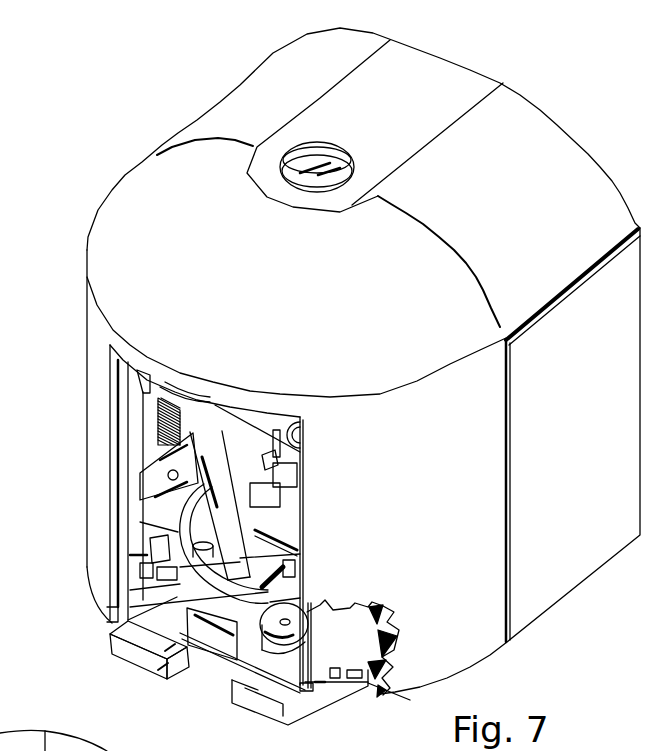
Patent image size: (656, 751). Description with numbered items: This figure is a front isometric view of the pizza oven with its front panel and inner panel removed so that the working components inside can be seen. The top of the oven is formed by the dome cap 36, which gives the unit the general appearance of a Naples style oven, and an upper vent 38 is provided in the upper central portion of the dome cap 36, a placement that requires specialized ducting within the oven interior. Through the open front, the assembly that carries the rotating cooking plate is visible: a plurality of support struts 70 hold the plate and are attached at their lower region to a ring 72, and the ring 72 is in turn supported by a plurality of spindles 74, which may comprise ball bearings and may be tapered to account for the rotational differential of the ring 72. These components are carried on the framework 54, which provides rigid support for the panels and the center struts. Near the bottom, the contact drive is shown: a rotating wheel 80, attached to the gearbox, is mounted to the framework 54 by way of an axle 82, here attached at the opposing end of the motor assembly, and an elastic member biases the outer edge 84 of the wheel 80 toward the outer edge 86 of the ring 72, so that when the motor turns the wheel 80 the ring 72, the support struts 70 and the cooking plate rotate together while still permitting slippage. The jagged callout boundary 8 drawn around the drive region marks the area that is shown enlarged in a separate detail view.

The dome cap 36 is at (238, 278).
The upper vent 38 is at (360, 157).
The support struts 70 is at (147, 465).
The ring 72 is at (140, 556).
The spindles 74 is at (150, 593).
The framework 54 is at (117, 650).
The rotating wheel 80 is at (213, 635).
The axle 82 is at (263, 645).
The outer edge of the ring 86 is at (300, 592).
The dispensing mechanism 8 is at (335, 698).
The outer edge of the wheel 84 is at (107, 750).